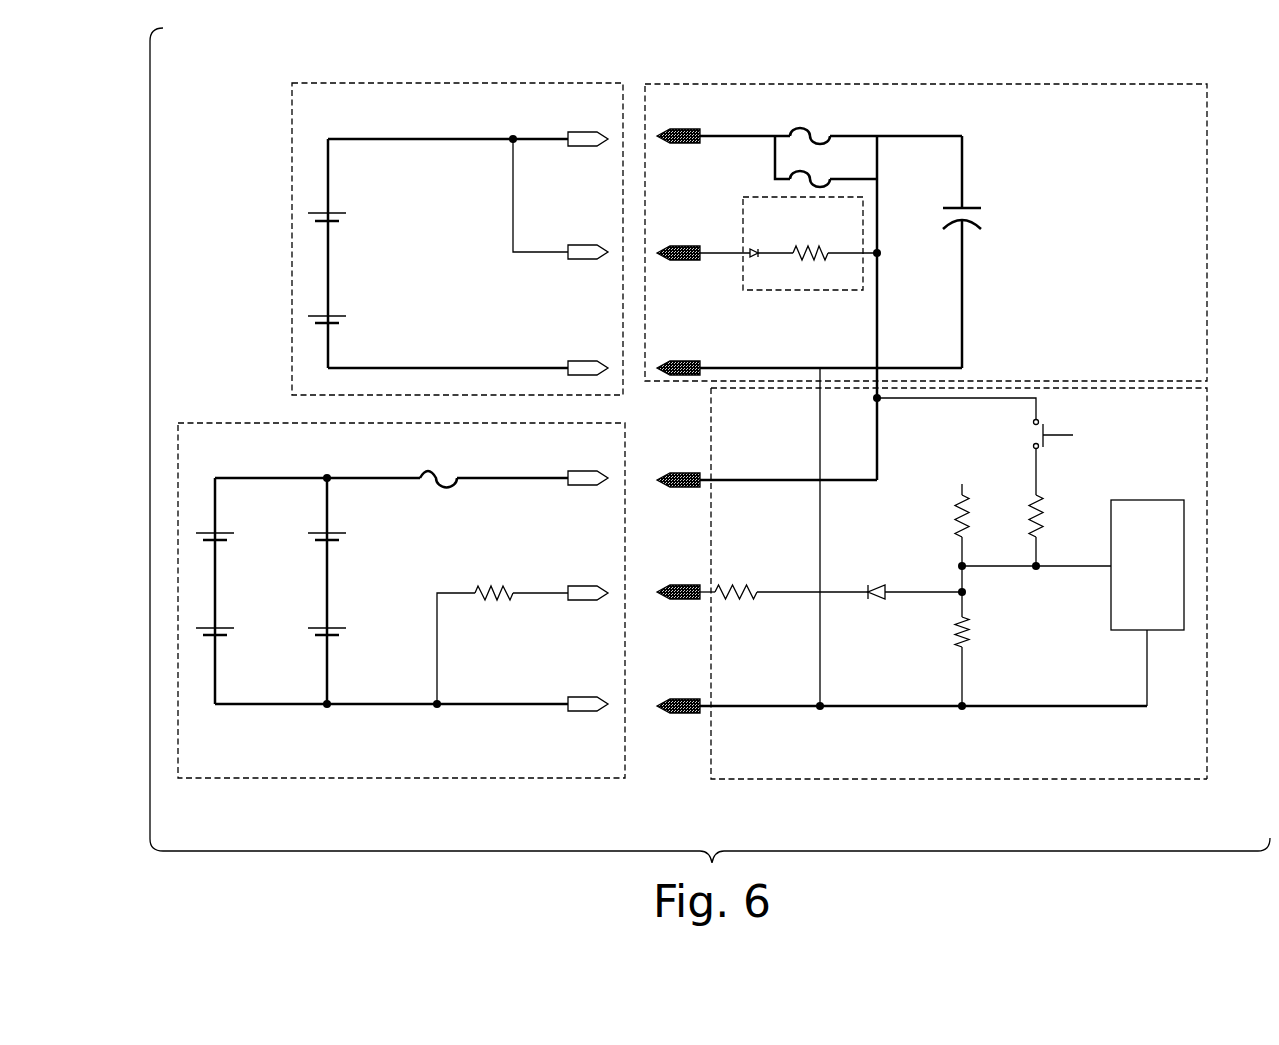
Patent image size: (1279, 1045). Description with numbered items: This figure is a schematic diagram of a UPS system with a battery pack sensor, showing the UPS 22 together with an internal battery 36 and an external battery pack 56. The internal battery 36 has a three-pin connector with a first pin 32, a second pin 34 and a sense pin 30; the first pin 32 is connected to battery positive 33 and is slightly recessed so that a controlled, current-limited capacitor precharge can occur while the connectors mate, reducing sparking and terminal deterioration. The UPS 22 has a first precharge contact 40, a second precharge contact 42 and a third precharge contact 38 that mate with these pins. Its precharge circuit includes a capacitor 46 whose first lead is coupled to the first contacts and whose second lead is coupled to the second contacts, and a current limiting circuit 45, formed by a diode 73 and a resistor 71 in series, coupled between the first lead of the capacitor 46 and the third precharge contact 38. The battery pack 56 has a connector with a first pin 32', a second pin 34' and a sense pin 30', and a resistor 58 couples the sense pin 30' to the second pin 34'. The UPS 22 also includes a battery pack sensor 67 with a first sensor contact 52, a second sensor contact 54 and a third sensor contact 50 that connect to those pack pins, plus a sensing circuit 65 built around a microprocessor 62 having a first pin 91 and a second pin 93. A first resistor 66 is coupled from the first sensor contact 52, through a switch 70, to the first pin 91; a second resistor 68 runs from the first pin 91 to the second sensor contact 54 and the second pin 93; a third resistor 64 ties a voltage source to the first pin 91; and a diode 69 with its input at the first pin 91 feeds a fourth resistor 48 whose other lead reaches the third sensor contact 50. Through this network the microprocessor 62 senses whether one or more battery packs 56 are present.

The internal battery 36 is at (447, 83).
The battery positive 33 is at (328, 184).
The first pin 32 is at (588, 153).
The sense pin 30 is at (588, 266).
The second pin 34 is at (562, 355).
The battery pack 56 is at (307, 778).
The resistor 58 is at (484, 587).
The first pin 32' is at (585, 488).
The sense pin 30' is at (585, 602).
The second pin 34' is at (585, 714).
The battery pack sensor 67 is at (1207, 421).
The UPS 22 is at (940, 779).
The sensing circuit 65 is at (740, 779).
The first precharge contact 40 is at (684, 129).
The capacitor 46 is at (964, 207).
The third precharge contact 38 is at (674, 246).
The current limiting circuit 45 is at (779, 290).
The diode 73 is at (755, 249).
The resistor 71 is at (800, 250).
The second precharge contact 42 is at (674, 361).
The first sensor contact 52 is at (684, 473).
The third sensor contact 50 is at (684, 585).
The fourth resistor 48 is at (752, 585).
The diode 69 is at (875, 586).
The second sensor contact 54 is at (684, 699).
The third resistor 64 is at (953, 513).
The second resistor 68 is at (953, 641).
The first resistor 66 is at (1038, 495).
The switch 70 is at (1050, 435).
The first pin 91 is at (1040, 566).
The microprocessor 62 is at (1135, 500).
The second pin 93 is at (965, 706).